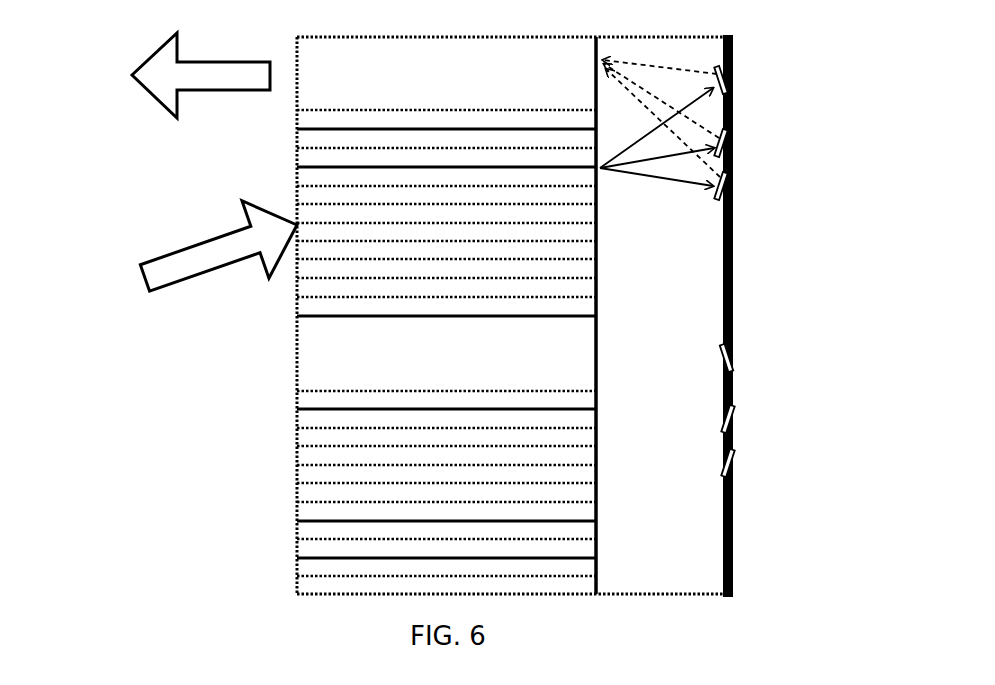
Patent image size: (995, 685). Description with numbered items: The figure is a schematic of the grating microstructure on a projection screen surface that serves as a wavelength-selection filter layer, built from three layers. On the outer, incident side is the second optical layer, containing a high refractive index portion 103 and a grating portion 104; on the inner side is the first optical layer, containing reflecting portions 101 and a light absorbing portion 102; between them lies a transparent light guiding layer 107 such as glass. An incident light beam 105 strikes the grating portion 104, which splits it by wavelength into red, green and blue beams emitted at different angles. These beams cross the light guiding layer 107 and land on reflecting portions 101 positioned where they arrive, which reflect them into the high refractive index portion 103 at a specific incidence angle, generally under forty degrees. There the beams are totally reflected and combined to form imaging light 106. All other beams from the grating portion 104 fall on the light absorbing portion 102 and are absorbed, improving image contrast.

The reflecting portion 101 is at (736, 78).
The light absorbing portion 102 is at (736, 230).
The high refractive index portion 103 is at (572, 345).
The grating portion 104 is at (577, 503).
The incident light beam 105 is at (157, 243).
The imaging light 106 is at (138, 55).
The light guiding layer 107 is at (693, 330).